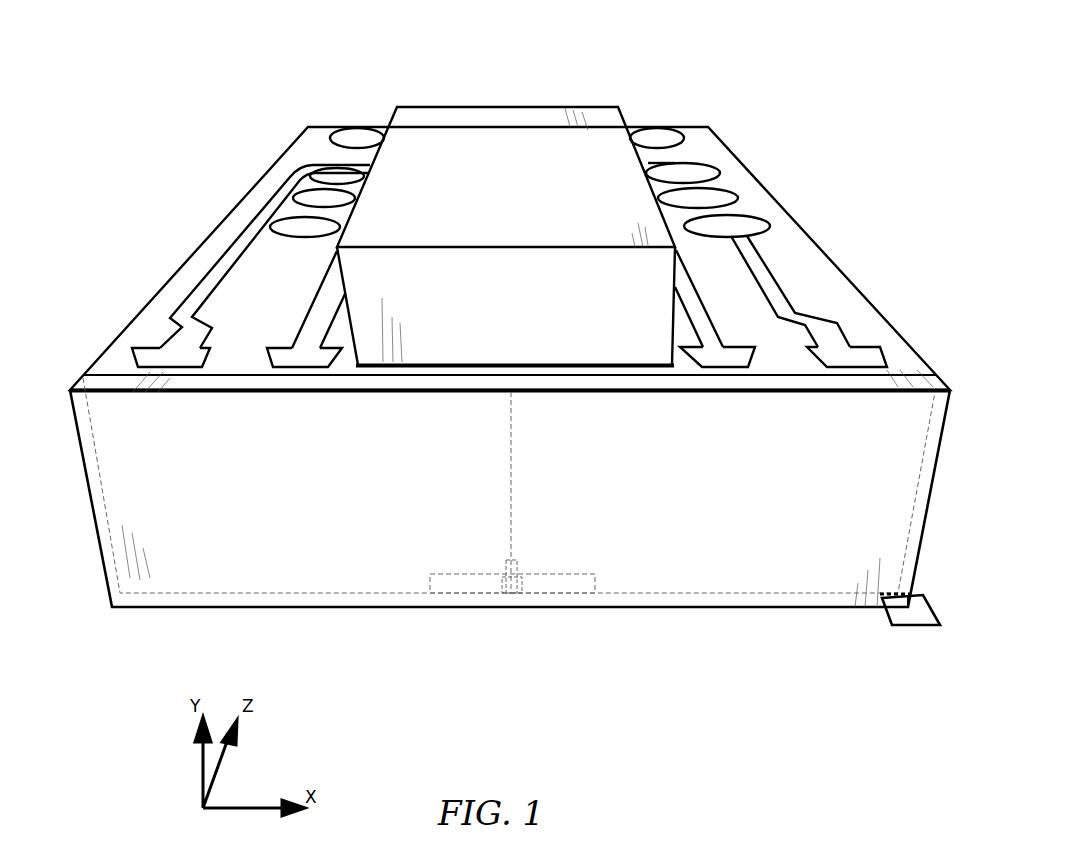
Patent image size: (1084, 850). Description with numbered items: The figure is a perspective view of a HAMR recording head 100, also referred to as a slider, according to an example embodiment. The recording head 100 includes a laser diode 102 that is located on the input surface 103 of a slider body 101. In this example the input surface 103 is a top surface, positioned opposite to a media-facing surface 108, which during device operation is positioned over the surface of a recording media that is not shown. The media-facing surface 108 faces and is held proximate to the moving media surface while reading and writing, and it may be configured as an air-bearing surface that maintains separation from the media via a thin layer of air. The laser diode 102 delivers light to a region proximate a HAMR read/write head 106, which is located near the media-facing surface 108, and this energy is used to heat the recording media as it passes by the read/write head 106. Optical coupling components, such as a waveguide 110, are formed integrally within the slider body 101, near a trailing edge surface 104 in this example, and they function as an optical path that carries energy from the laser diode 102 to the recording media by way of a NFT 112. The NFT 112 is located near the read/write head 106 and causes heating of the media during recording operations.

The HAMR recording head 100 is at (724, 62).
The slider body 101 is at (282, 157).
The laser diode 102 is at (418, 108).
The input surface 103 is at (145, 328).
The trailing edge surface 104 is at (183, 578).
The read/write head 106 is at (518, 592).
The media-facing surface 108 is at (928, 628).
The waveguide 110 is at (511, 473).
The NFT 112 is at (508, 592).